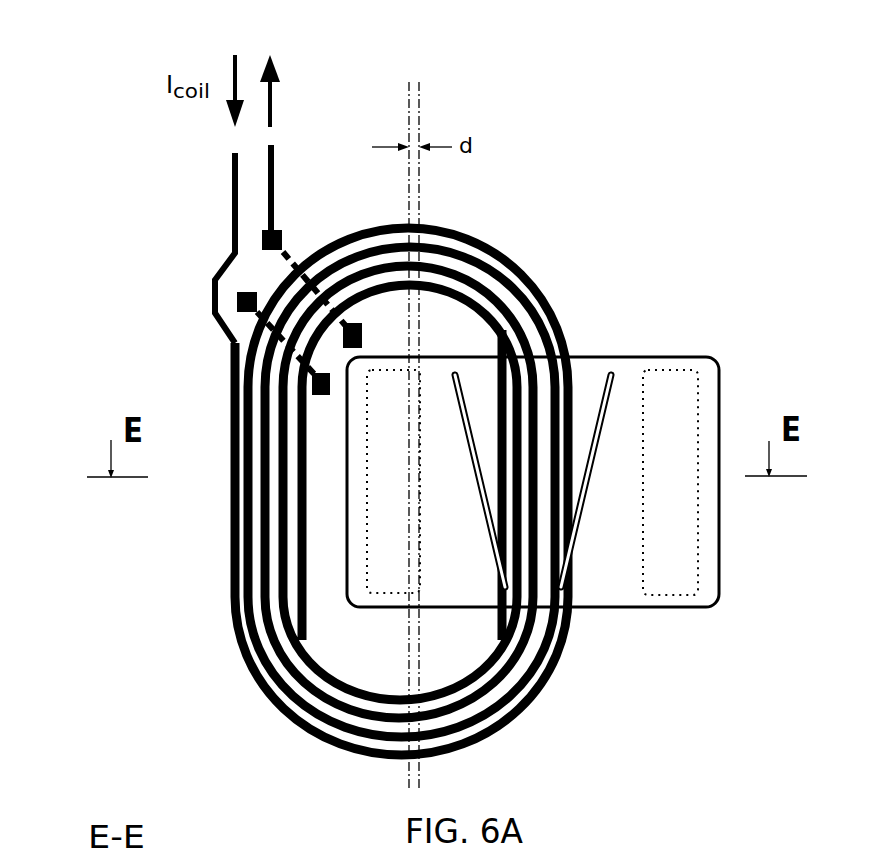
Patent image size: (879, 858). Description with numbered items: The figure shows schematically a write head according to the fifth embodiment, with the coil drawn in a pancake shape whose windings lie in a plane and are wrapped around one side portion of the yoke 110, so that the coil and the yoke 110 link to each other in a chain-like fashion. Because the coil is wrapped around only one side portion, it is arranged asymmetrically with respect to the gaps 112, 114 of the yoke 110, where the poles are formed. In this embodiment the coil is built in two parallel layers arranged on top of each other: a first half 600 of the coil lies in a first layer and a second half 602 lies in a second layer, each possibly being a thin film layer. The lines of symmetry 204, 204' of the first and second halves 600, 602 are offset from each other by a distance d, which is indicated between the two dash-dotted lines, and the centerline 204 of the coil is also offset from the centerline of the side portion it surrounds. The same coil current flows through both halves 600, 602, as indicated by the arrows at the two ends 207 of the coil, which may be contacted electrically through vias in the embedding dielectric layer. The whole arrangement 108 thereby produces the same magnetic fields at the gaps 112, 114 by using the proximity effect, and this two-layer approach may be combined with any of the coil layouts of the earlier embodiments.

The coil assembly 108 is at (328, 431).
The yoke 110 is at (627, 853).
The gap 112 is at (482, 482).
The gap 114 is at (587, 488).
The centerline 204 is at (379, 401).
The line of symmetry 204' is at (478, 420).
The ends of the coil 207 is at (271, 168).
The first half of the coil 600 is at (245, 669).
The second half of the coil 602 is at (562, 674).